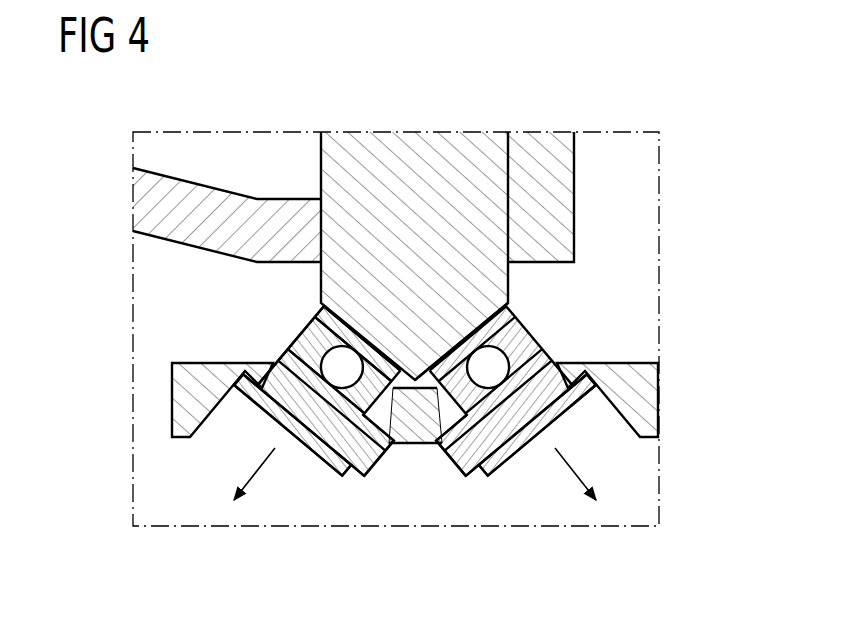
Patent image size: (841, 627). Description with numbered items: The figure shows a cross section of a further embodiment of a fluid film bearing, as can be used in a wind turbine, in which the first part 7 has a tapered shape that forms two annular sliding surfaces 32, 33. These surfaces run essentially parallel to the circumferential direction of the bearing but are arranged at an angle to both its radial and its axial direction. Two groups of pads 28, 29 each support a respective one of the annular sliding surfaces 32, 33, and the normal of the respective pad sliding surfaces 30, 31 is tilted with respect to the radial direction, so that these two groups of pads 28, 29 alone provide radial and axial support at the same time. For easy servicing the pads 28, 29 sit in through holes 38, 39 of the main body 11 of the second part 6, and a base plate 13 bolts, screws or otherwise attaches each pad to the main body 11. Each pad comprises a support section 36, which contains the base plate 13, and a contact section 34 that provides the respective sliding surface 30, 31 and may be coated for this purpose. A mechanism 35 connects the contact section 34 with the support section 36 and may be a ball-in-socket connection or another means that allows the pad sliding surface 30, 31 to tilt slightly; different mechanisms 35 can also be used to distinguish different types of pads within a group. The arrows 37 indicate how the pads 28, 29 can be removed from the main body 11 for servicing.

The second part 6 is at (595, 357).
The first part 7 is at (510, 296).
The main body 11 is at (648, 405).
The base plate 13 is at (522, 452).
The group of pads 28 is at (262, 313).
The group of pads 29 is at (566, 312).
The pad sliding surface 30 is at (375, 325).
The pad sliding surface 31 is at (455, 325).
The annular sliding surface 32 is at (416, 386).
The annular sliding surface 33 is at (426, 443).
The contact section 34 is at (314, 318).
The mechanism 35 is at (290, 346).
The support section 36 is at (308, 452).
The arrows 37 is at (253, 475).
The through hole 38 is at (372, 430).
The through hole 39 is at (458, 430).